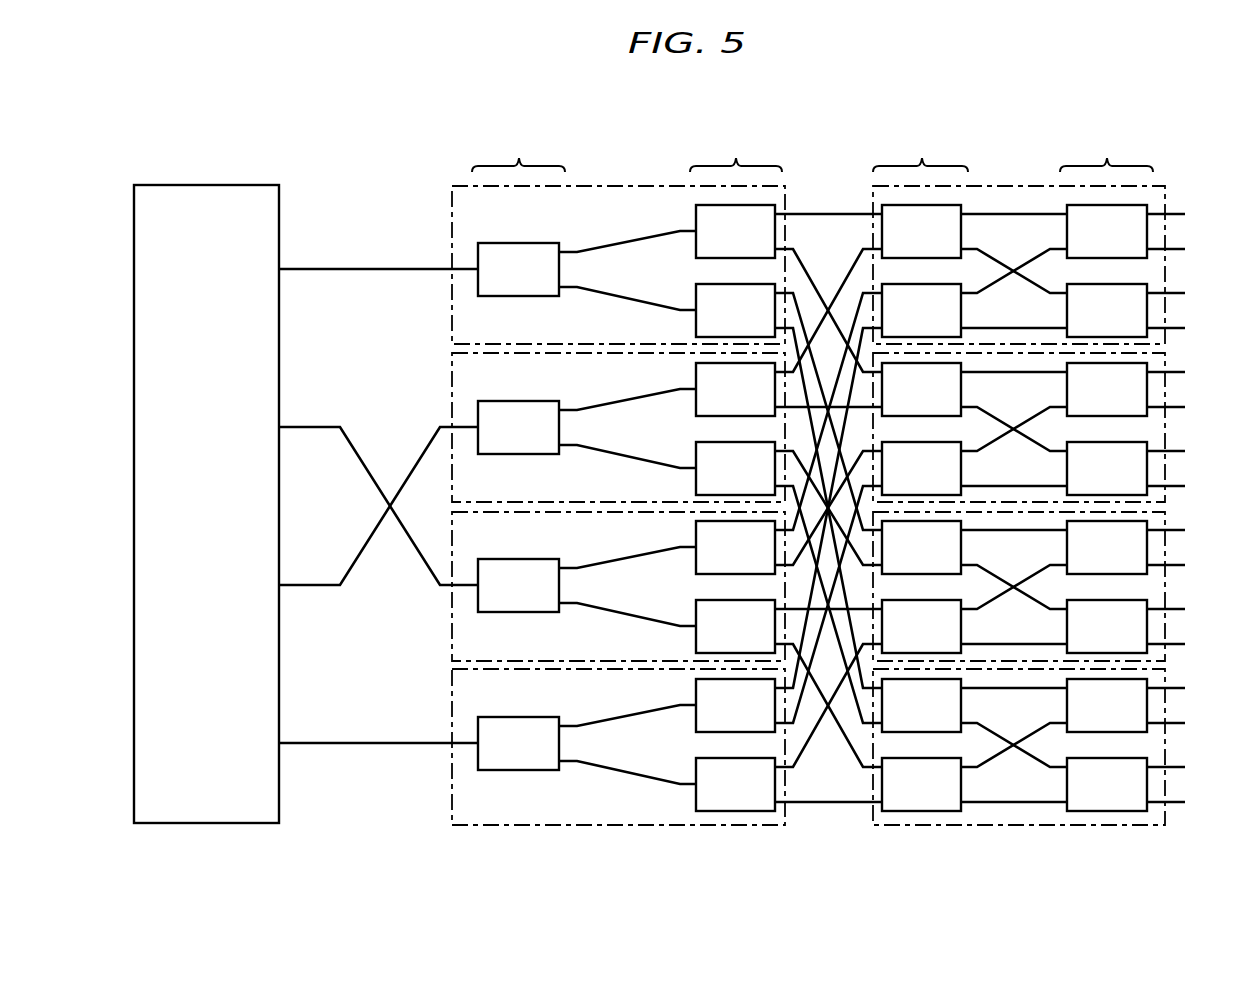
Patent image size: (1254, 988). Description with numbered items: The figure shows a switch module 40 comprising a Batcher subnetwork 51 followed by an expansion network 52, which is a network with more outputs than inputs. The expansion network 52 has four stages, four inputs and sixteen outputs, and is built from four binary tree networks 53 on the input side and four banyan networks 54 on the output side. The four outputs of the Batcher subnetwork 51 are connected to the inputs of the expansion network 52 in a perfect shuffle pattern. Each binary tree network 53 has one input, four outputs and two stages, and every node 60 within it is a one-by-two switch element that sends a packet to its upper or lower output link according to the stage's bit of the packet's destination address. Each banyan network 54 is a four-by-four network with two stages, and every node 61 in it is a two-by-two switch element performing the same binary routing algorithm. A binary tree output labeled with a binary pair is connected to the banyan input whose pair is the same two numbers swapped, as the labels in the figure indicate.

The switch module 40 is at (1218, 860).
The Batcher subnetwork 51 is at (238, 185).
The expansion network 52 is at (1218, 118).
The binary tree network 53 is at (452, 325).
The banyan network 54 is at (1165, 340).
The node 60 is at (512, 243).
The node 61 is at (950, 258).